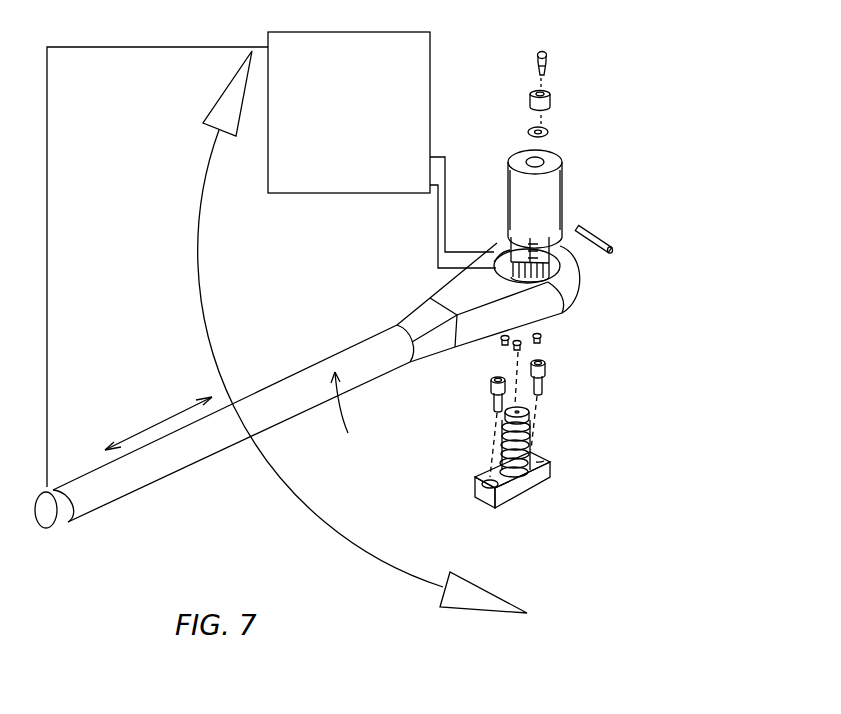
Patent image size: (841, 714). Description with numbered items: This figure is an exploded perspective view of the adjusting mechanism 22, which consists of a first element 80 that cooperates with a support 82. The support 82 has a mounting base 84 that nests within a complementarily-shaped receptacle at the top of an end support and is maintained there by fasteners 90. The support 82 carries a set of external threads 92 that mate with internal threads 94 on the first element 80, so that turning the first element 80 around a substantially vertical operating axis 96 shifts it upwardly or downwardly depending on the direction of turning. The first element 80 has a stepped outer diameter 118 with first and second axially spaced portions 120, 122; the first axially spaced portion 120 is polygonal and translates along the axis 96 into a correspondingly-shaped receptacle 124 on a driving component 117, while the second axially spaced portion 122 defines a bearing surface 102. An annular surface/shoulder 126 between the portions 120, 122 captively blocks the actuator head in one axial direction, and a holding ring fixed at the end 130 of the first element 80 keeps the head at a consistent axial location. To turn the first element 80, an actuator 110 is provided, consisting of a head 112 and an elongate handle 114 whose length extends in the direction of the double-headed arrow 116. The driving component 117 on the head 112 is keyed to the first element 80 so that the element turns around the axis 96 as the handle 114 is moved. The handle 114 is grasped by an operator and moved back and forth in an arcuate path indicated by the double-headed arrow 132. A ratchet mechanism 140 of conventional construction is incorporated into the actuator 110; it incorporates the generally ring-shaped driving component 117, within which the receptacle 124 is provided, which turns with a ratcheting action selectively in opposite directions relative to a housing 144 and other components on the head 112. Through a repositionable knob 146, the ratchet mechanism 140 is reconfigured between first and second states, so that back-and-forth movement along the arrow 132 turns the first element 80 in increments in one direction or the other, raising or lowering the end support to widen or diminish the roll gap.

The adjusting mechanism 22 is at (656, 162).
The first element 80 is at (520, 193).
The support 82 is at (497, 445).
The mounting base 84 is at (515, 493).
The fasteners 90 is at (495, 407).
The external threads 92 is at (530, 450).
The internal threads 94 is at (560, 222).
The operating axis 96 is at (527, 146).
The bearing surface 102 is at (558, 155).
The actuator 110 is at (353, 415).
The head 112 is at (472, 283).
The elongate handle 114 is at (212, 435).
The double-headed arrow 116 is at (155, 425).
The driving component 117 is at (562, 300).
The stepped outer diameter 118 is at (500, 173).
The first axially spaced portion 120 is at (510, 243).
The second axially spaced portion 122 is at (547, 200).
The receptacle 124 is at (527, 276).
The annular surface/shoulder 126 is at (560, 253).
The end 130 is at (558, 276).
The double-headed arrow 132 is at (390, 565).
The ratchet mechanism 140 is at (358, 128).
The housing 144 is at (438, 294).
The repositionable knob 146 is at (63, 513).